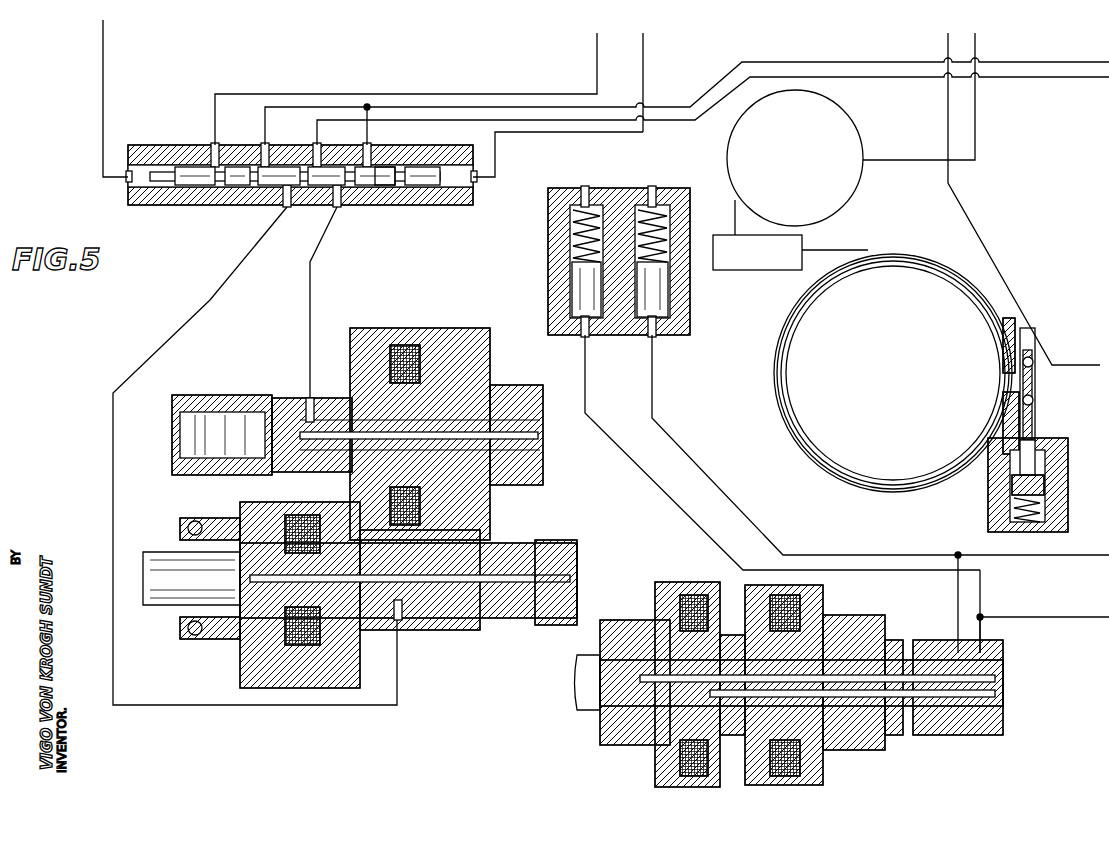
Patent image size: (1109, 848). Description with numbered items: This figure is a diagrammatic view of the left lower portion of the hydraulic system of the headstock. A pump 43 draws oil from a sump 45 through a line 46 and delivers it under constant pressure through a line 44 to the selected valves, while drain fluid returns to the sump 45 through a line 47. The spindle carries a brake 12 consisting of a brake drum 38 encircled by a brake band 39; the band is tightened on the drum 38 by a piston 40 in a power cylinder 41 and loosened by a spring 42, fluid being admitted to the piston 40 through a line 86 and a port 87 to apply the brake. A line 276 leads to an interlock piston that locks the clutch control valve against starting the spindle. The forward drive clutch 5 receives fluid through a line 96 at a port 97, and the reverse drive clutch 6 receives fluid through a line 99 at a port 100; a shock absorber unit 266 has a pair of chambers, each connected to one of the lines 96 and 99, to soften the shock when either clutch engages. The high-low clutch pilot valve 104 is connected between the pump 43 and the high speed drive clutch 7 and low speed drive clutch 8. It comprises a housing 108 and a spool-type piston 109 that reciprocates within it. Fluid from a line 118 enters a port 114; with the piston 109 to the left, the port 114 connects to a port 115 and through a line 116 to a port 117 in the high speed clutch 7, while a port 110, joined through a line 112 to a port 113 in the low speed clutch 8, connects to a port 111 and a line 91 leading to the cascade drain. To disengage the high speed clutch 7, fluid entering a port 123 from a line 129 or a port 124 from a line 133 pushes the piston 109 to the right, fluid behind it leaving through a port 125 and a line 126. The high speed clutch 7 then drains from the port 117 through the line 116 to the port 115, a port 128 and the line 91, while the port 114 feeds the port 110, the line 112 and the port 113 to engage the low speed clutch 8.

The forward drive clutch 5 is at (845, 605).
The reverse drive clutch 6 is at (660, 571).
The high speed drive clutch 7 is at (360, 596).
The low speed drive clutch 8 is at (357, 429).
The brake 12 is at (1010, 435).
The brake drum 38 is at (861, 478).
The brake band 39 is at (821, 466).
The piston 40 is at (1000, 500).
The power cylinder 41 is at (1068, 507).
The spring 42 is at (1036, 530).
The pump 43 is at (852, 127).
The line 44 is at (975, 42).
The sump 45 is at (752, 271).
The line 46 is at (742, 213).
The line 47 is at (826, 250).
The line 86 is at (1097, 478).
The port 87 is at (1060, 480).
The line 91 is at (302, 113).
The line 96 is at (1098, 564).
The port 97 is at (957, 636).
The line 99 is at (1098, 624).
The port 100 is at (982, 648).
The high-low clutch pilot valve 104 is at (301, 189).
The housing 108 is at (227, 206).
The spool-type piston 109 is at (387, 205).
The port 110 is at (337, 207).
The port 111 is at (383, 144).
The line 112 is at (310, 318).
The port 113 is at (311, 398).
The port 114 is at (332, 144).
The port 115 is at (287, 207).
The line 116 is at (200, 318).
The port 117 is at (398, 620).
The line 118 is at (405, 122).
The port 123 is at (130, 177).
The port 124 is at (213, 143).
The port 125 is at (470, 180).
The line 126 is at (643, 42).
The port 128 is at (263, 143).
The line 129 is at (103, 40).
The line 133 is at (222, 94).
The shock absorber unit 266 is at (540, 256).
The line 276 is at (948, 42).